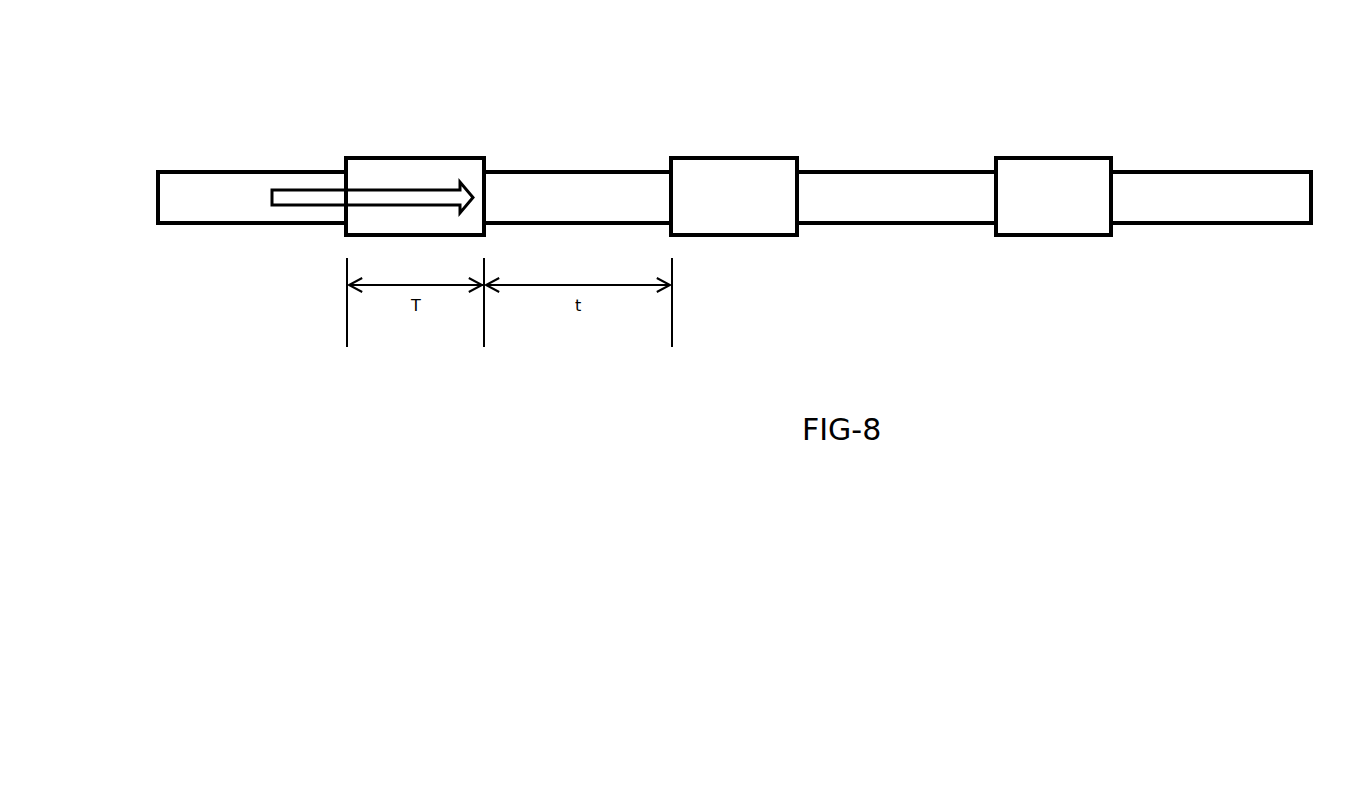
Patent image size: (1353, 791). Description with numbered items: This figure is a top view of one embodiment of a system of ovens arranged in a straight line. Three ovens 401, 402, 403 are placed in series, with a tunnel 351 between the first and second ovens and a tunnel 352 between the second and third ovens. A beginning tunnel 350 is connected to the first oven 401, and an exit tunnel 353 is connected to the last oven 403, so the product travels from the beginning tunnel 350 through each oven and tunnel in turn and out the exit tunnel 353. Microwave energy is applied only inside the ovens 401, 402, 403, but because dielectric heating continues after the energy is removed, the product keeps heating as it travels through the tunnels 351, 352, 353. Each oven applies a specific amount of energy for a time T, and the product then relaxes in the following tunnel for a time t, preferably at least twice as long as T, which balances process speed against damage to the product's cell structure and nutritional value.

The beginning tunnel 350 is at (243, 163).
The oven 401 is at (404, 152).
The tunnel 351 is at (571, 162).
The oven 402 is at (729, 149).
The tunnel 352 is at (889, 162).
The oven 403 is at (1042, 153).
The exit tunnel 353 is at (1210, 159).